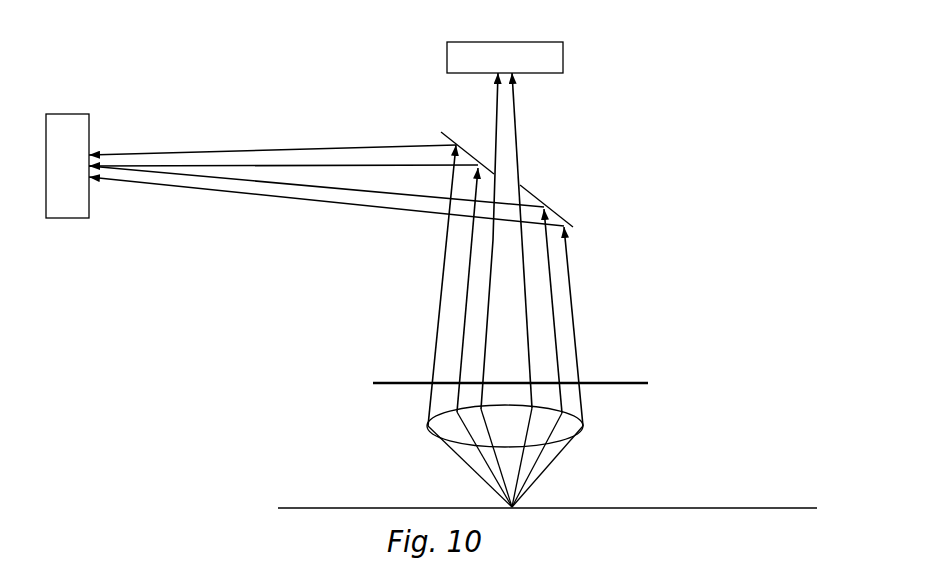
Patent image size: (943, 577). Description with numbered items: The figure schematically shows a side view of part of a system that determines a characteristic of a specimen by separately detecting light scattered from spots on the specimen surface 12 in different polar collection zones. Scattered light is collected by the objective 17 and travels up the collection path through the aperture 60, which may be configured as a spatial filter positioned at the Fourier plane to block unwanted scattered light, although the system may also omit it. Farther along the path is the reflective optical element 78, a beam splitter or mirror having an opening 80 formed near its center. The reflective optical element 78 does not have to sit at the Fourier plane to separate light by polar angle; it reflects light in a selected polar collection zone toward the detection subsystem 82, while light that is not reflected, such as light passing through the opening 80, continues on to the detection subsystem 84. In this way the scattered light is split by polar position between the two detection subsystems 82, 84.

The detection subsystem 84 is at (563, 55).
The detection subsystem 82 is at (89, 130).
The opening 80 is at (505, 180).
The reflective optical element 78 is at (560, 212).
The aperture 60 is at (617, 382).
The objective 17 is at (575, 426).
The sample surface 12 is at (547, 492).